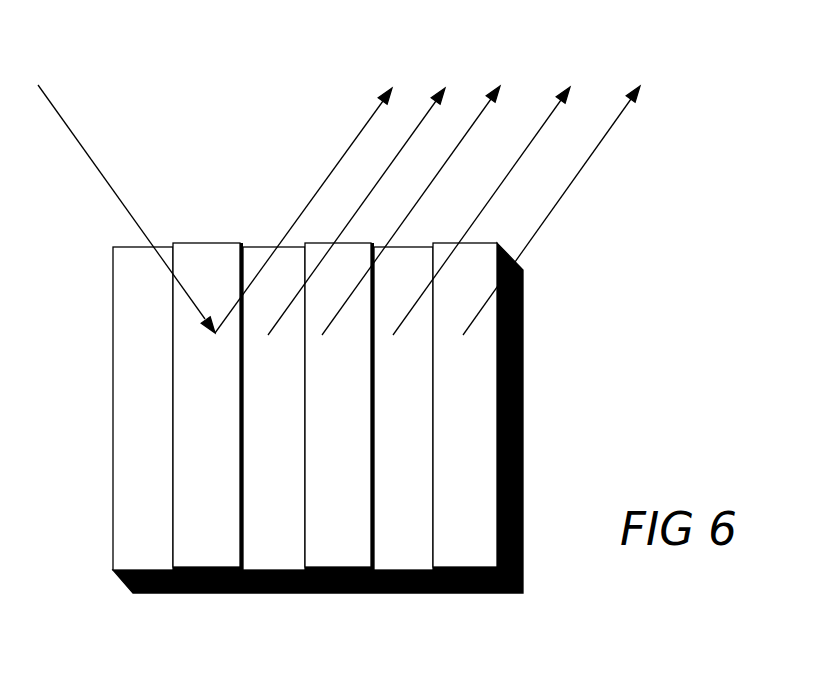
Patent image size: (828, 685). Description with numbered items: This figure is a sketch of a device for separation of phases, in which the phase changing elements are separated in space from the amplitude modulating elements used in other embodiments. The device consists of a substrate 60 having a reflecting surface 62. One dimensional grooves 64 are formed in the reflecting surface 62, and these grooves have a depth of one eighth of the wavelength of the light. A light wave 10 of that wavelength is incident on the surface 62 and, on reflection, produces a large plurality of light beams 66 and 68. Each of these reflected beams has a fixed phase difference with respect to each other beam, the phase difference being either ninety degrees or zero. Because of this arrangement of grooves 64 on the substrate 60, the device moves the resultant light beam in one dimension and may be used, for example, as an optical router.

The light wave 10 is at (65, 123).
The substrate 60 is at (570, 442).
The reflecting surface 62 is at (128, 468).
The one dimensional grooves 64 is at (197, 405).
The light beams 66 is at (365, 113).
The light beams 68 is at (308, 202).